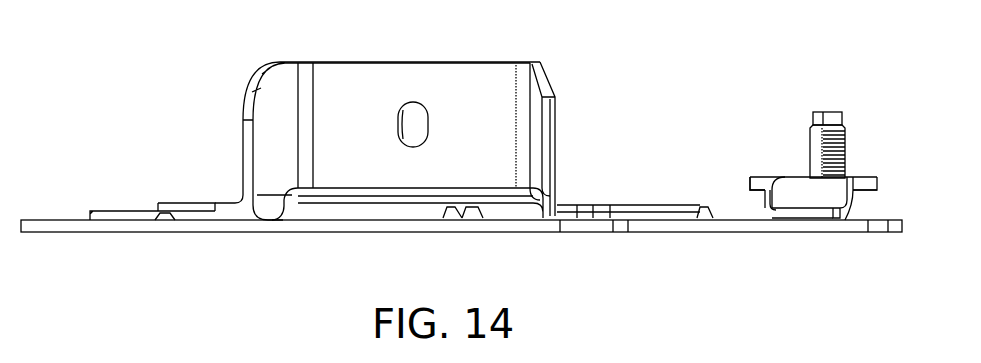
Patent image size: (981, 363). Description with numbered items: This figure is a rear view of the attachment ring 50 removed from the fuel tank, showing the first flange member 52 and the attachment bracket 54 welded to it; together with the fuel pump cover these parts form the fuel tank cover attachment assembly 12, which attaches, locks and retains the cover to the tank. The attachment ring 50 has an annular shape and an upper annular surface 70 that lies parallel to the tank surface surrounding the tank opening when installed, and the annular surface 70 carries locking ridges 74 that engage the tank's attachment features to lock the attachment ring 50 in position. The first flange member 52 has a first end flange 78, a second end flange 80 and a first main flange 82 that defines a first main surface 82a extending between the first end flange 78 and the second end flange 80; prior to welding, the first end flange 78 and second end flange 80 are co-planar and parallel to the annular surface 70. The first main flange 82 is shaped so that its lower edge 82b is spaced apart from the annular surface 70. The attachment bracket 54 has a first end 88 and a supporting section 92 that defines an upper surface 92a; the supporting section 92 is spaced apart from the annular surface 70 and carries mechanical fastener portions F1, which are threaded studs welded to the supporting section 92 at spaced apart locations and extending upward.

The fuel tank cover attachment assembly 12 is at (661, 53).
The attachment ring 50 is at (47, 236).
The first flange member 52 is at (352, 56).
The attachment bracket 54 is at (760, 172).
The annular surface 70 is at (425, 215).
The locking ridges 74 is at (167, 219).
The first end flange 78 is at (228, 213).
The second end flange 80 is at (556, 212).
The first main flange 82 is at (472, 105).
The first main surface 82a is at (423, 88).
The lower edge 82b is at (365, 188).
The first end 88 is at (802, 192).
The supporting section 92 is at (872, 183).
The upper surface 92a is at (792, 176).
The mechanical fastener portion F1 is at (846, 152).